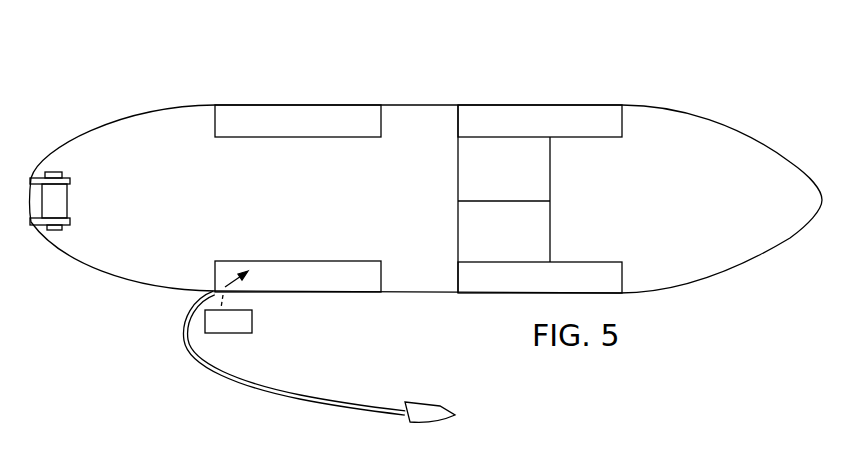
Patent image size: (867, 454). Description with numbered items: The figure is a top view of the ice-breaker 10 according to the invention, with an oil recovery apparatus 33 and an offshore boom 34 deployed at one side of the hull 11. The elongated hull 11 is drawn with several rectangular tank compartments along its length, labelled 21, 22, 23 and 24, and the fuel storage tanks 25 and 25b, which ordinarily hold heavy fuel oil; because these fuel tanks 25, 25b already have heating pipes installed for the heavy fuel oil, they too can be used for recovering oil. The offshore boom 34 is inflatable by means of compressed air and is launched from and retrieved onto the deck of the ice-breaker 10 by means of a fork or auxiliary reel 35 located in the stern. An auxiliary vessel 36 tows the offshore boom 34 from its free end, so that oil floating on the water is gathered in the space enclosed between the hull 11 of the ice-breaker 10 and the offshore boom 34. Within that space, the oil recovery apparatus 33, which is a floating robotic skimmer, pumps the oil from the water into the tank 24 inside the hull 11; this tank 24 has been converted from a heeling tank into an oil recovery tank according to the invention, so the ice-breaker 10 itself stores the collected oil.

The ice-breaker 10 is at (426, 189).
The hull 11 is at (740, 248).
The first solar panel 21 is at (308, 120).
The second solar panel 22 is at (572, 110).
The third solar panel 23 is at (607, 281).
The tank 24 is at (347, 283).
The fuel storage tank 25 is at (552, 166).
The fuel storage tank 25b is at (552, 226).
The oil recovery apparatus 33 is at (248, 328).
The offshore boom 34 is at (190, 360).
The auxiliary reel 35 is at (68, 192).
The auxiliary vessel 36 is at (450, 404).